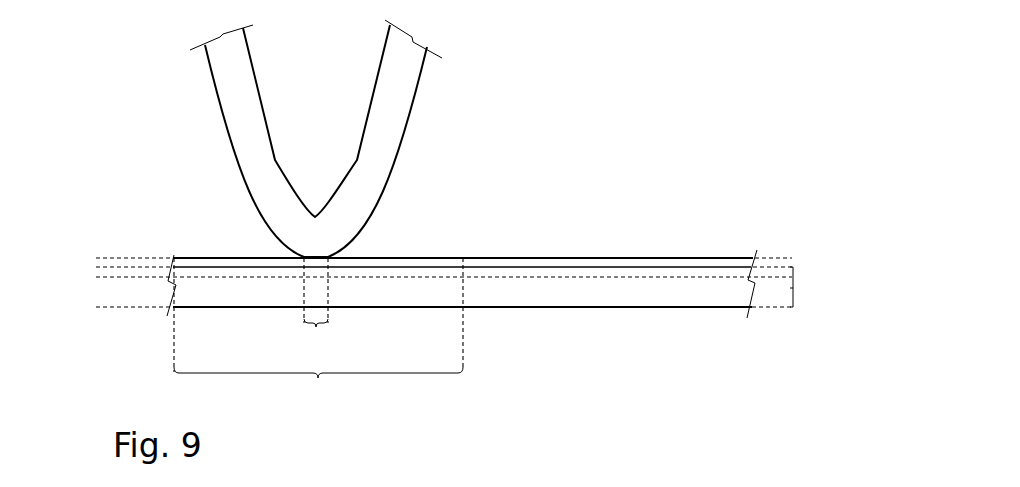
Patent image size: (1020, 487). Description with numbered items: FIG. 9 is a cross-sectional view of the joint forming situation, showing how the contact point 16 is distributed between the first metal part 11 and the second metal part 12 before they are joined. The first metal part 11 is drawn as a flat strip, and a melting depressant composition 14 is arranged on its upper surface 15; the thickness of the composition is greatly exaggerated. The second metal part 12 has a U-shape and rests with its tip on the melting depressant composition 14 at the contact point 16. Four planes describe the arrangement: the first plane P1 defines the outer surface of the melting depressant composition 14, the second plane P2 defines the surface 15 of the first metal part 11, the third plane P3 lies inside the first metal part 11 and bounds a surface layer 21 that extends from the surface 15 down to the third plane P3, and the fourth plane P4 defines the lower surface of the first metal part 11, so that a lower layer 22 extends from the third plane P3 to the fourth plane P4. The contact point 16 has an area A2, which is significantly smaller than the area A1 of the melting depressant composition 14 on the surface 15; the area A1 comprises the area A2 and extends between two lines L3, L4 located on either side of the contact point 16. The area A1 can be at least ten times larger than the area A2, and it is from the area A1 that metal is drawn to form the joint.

The second metal part 12 is at (214, 54).
The surface 15 is at (243, 249).
The melting depressant composition 14 is at (204, 262).
The contact point 16 is at (312, 257).
The line L4 is at (163, 242).
The line L3 is at (463, 236).
The first plane P1 is at (108, 257).
The second plane P2 is at (97, 267).
The third plane P3 is at (97, 277).
The fourth plane P4 is at (97, 307).
The first metal part 11 is at (184, 290).
The area A2 is at (316, 327).
The area A1 is at (318, 378).
The surface layer 21 is at (794, 271).
The lower layer 22 is at (794, 292).